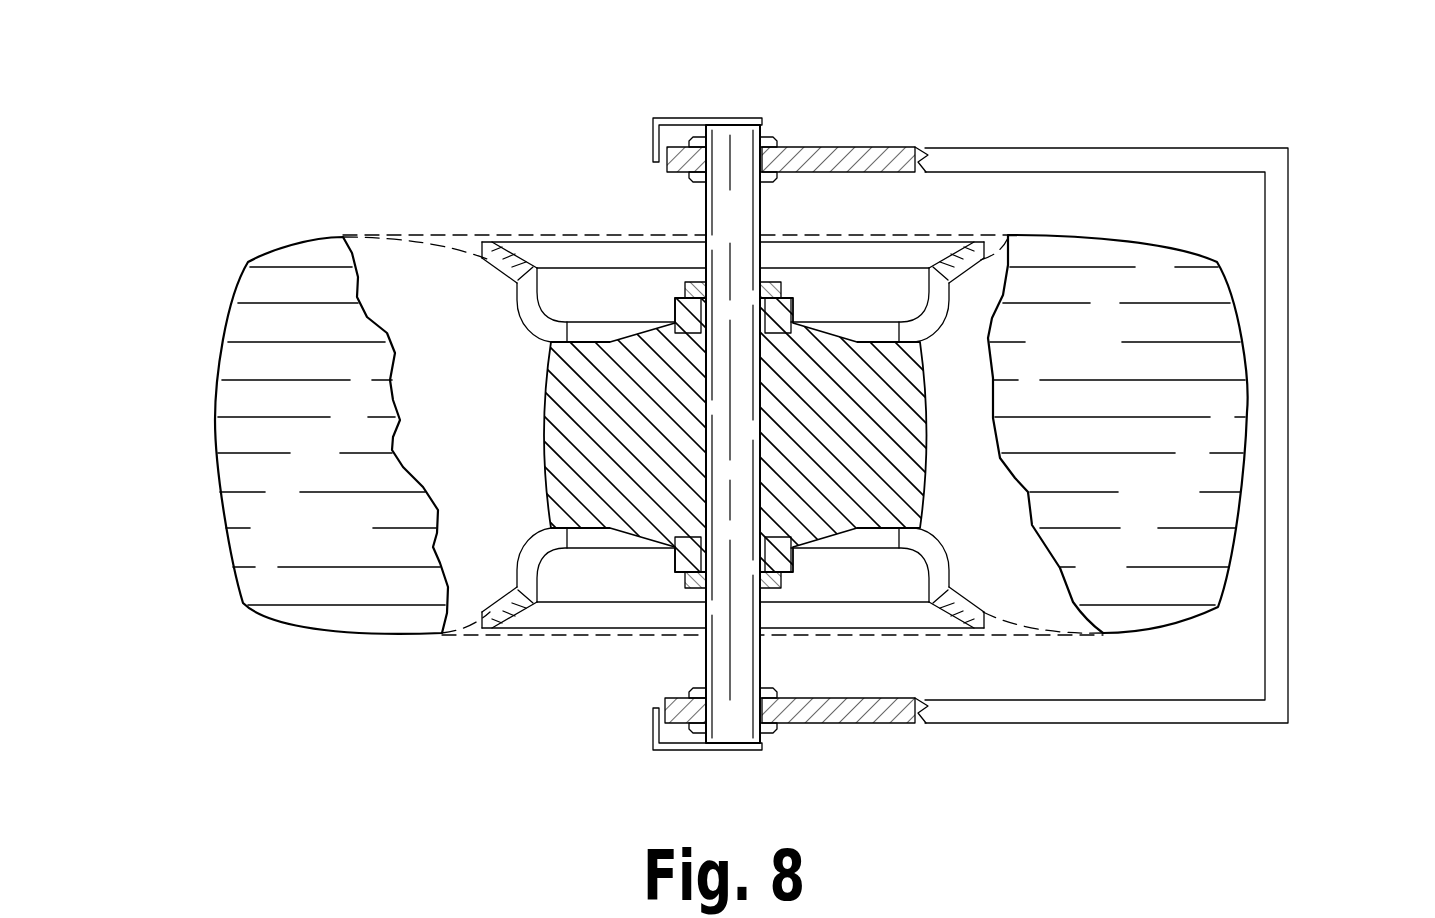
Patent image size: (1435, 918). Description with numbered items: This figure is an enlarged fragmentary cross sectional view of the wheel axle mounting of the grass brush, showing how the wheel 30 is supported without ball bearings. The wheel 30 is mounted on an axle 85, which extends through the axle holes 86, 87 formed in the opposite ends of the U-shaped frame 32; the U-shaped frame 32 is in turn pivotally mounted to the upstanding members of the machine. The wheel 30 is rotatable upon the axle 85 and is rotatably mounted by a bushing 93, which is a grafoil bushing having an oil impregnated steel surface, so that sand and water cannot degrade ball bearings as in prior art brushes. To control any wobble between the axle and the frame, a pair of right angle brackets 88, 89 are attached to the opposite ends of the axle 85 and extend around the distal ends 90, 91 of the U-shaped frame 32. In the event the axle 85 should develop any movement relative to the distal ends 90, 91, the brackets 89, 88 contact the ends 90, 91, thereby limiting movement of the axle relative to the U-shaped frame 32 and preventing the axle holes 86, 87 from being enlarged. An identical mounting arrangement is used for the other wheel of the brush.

The wheel 30 is at (232, 402).
The U-shaped frame 32 is at (1286, 322).
The axle 85 is at (752, 200).
The axle hole 86 is at (767, 733).
The axle hole 87 is at (763, 137).
The right angle bracket 88 is at (663, 748).
The right angle bracket 89 is at (670, 122).
The distal end 90 is at (655, 698).
The distal end 91 is at (668, 165).
The bushing 93 is at (782, 290).